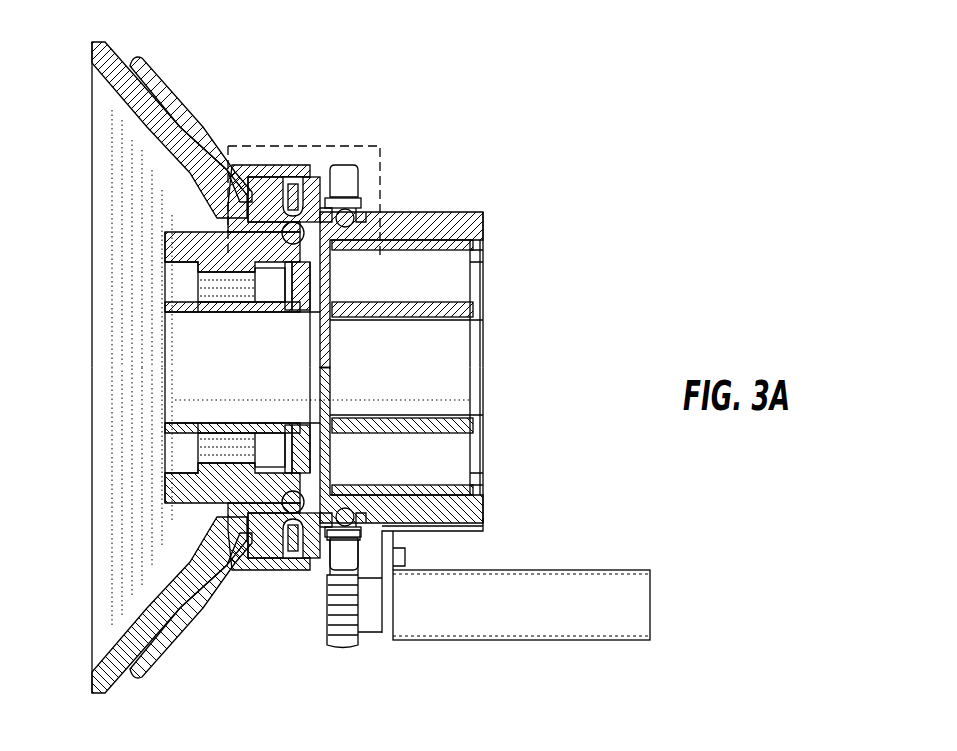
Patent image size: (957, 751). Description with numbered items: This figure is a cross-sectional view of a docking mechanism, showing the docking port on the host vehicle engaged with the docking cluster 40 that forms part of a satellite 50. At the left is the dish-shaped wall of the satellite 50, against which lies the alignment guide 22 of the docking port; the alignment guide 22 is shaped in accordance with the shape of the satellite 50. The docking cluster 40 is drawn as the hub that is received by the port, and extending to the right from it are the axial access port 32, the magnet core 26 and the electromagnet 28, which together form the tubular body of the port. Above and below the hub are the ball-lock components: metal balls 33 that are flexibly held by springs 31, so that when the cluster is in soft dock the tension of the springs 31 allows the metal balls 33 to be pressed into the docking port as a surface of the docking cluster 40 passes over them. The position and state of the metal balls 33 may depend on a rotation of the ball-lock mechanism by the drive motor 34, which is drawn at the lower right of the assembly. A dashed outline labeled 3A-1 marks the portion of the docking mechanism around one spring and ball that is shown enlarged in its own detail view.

The alignment guide 22 is at (166, 90).
The magnet core 26 is at (453, 212).
The electromagnet 28 is at (510, 297).
The springs 31 is at (293, 192).
The axial access port 32 is at (488, 374).
The metal balls 33 is at (304, 242).
The drive motor 34 is at (548, 633).
The docking cluster 40 is at (172, 240).
The satellite 50 is at (155, 630).
The portion of the docking mechanism 3A-1 is at (355, 146).